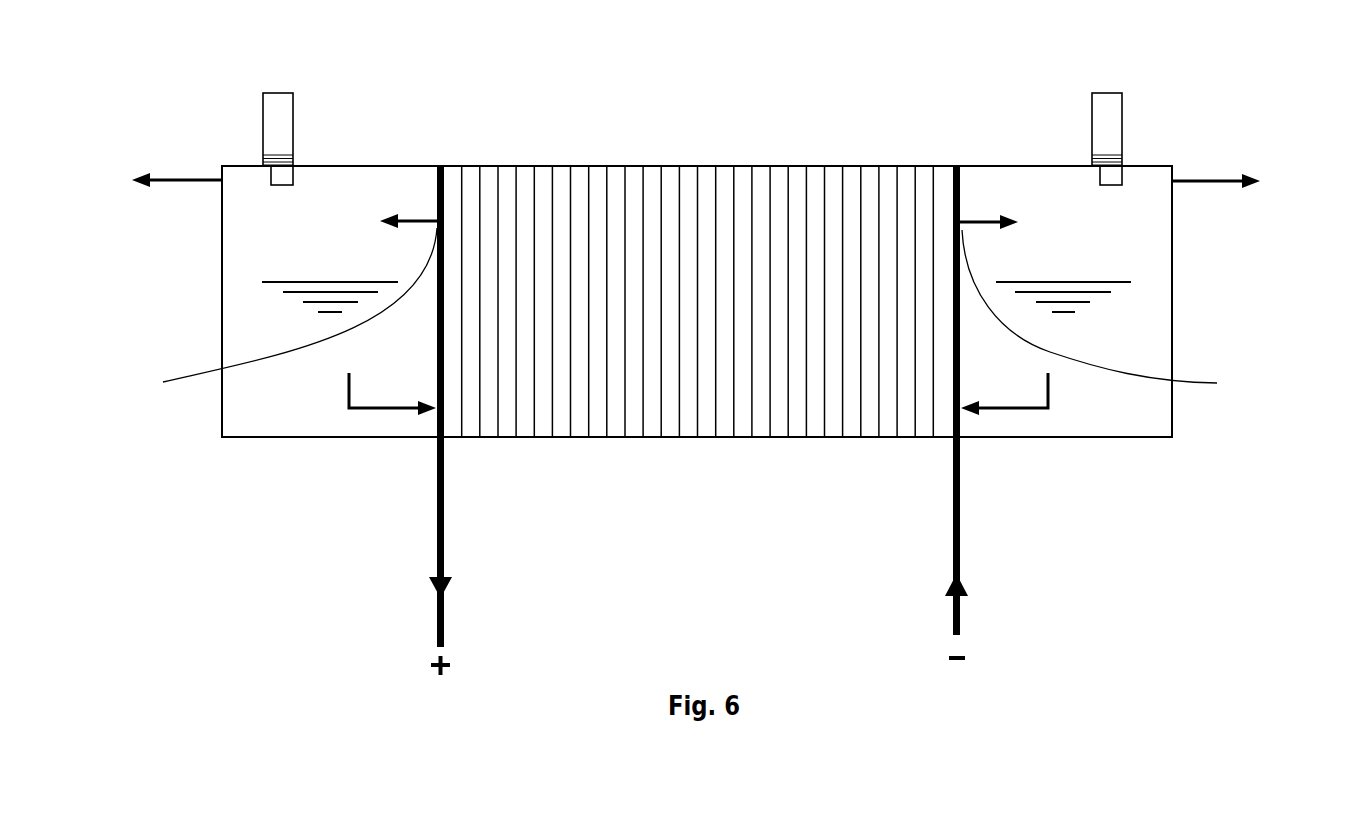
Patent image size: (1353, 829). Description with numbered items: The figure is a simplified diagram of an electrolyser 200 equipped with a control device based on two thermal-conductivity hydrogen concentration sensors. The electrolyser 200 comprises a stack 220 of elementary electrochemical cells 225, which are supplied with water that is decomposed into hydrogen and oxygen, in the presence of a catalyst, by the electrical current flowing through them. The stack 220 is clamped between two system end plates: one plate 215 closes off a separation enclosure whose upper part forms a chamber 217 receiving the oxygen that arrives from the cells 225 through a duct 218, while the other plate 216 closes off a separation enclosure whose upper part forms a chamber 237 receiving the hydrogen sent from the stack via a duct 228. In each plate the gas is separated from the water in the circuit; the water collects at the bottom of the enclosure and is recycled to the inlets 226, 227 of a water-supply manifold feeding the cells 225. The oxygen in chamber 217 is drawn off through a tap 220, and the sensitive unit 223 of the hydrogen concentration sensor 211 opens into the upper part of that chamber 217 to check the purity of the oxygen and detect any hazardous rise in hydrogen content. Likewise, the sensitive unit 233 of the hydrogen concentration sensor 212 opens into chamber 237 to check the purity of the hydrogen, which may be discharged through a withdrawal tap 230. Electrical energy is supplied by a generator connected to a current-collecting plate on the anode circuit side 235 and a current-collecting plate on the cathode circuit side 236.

The electrolyser 200 is at (785, 125).
The hydrogen concentration sensor 211 is at (273, 113).
The hydrogen concentration sensor 212 is at (1110, 113).
The system end plate 215 is at (408, 166).
The system end plate 216 is at (994, 166).
The chamber 217 is at (268, 259).
The duct 218 is at (276, 311).
The stack 220 is at (221, 178).
The sensitive unit 223 is at (287, 173).
The elementary electrochemical cells 225 is at (907, 437).
The inlet 226 is at (407, 415).
The inlet 227 is at (987, 413).
The duct 228 is at (1119, 314).
The withdrawal tap 230 is at (1174, 184).
The sensitive unit 233 is at (1117, 173).
The current-collecting plate on the anode circuit side 235 is at (437, 525).
The current-collecting plate on the cathode circuit side 236 is at (962, 512).
The chamber 237 is at (1148, 237).